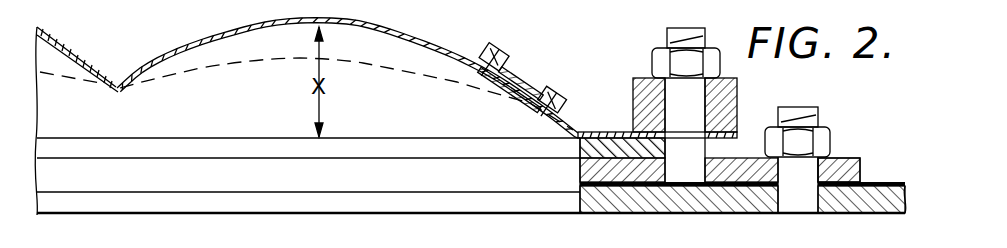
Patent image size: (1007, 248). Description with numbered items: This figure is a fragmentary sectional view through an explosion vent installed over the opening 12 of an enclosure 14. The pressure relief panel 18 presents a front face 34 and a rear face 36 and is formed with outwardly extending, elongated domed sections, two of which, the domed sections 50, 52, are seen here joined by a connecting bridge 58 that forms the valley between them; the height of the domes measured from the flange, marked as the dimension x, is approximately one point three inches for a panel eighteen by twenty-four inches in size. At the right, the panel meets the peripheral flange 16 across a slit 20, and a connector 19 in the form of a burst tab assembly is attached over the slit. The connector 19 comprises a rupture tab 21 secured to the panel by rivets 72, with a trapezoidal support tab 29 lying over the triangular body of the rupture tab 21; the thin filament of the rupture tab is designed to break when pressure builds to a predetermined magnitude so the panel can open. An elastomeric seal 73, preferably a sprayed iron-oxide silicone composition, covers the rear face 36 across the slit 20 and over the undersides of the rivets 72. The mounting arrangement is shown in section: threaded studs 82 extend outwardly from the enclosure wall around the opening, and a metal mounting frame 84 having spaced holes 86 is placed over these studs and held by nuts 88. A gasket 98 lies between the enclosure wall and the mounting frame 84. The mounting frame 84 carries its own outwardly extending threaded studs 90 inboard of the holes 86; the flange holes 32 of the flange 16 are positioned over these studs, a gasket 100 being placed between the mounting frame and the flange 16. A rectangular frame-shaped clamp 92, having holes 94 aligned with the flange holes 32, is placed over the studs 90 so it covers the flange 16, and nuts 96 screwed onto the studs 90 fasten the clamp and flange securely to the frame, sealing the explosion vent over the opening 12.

The opening 12 is at (540, 205).
The enclosure 14 is at (760, 203).
The peripheral flange 16 is at (604, 133).
The pressure relief panel 18 is at (190, 125).
The connector 19 is at (527, 103).
The slit 20 is at (509, 89).
The rupture tab 21 is at (476, 64).
The support tab 29 is at (520, 83).
The flange hole 32 is at (710, 148).
The front face 34 is at (396, 27).
The rear face 36 is at (414, 45).
The domed section 50 is at (60, 42).
The domed section 52 is at (161, 55).
The connecting bridge 58 is at (115, 92).
The rivet 72 is at (523, 78).
The elastomeric seal 73 is at (541, 52).
The threaded stud 82 is at (798, 203).
The mounting frame 84 is at (861, 182).
The hole 86 is at (822, 173).
The nut 88 is at (823, 127).
The threaded stud 90 is at (689, 31).
The clamp 92 is at (738, 95).
The hole 94 is at (729, 98).
The nut 96 is at (658, 50).
The gasket 98 is at (705, 188).
The gasket 100 is at (621, 150).